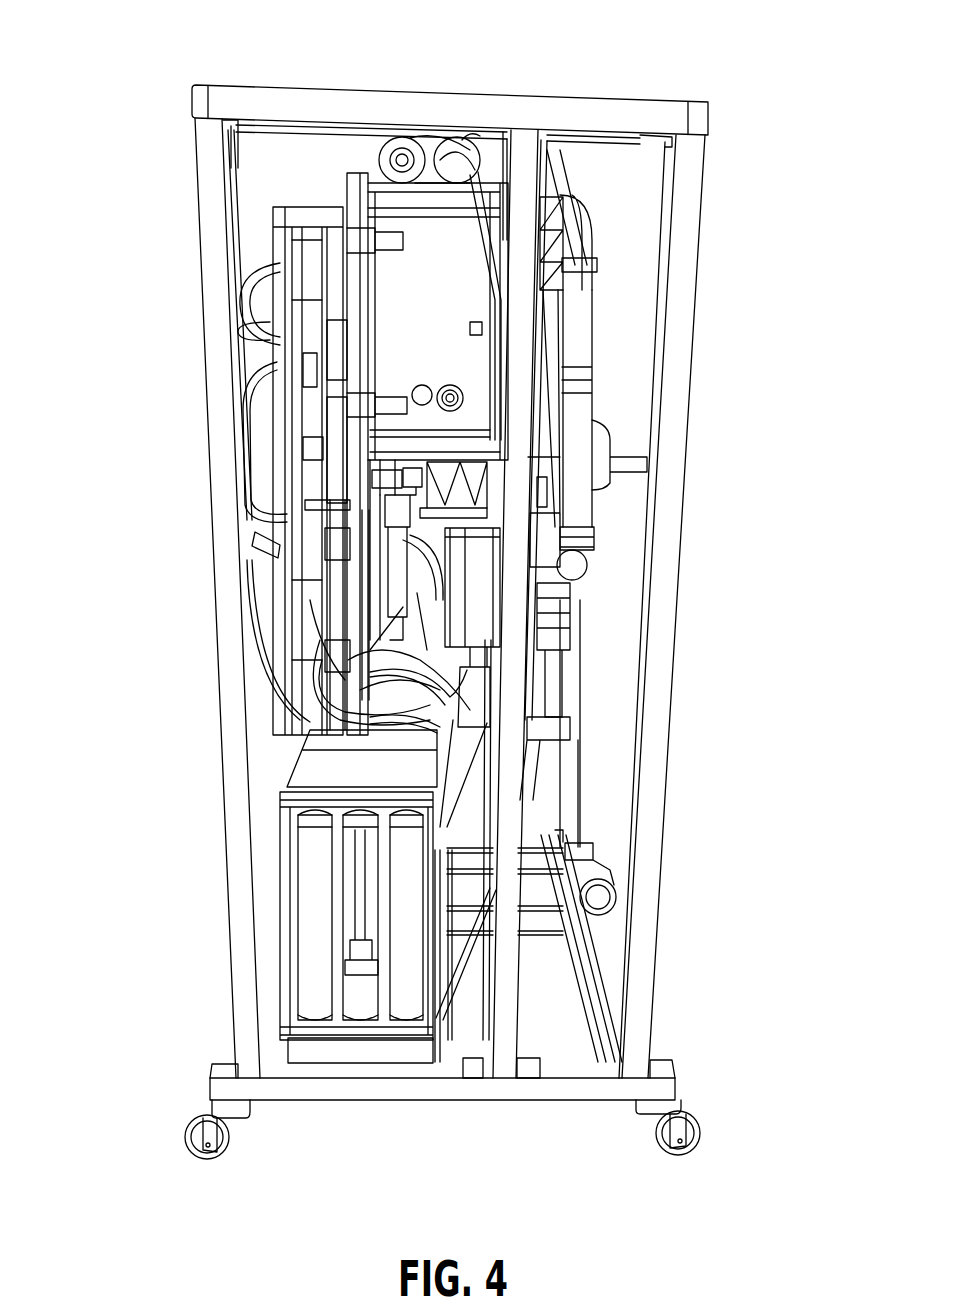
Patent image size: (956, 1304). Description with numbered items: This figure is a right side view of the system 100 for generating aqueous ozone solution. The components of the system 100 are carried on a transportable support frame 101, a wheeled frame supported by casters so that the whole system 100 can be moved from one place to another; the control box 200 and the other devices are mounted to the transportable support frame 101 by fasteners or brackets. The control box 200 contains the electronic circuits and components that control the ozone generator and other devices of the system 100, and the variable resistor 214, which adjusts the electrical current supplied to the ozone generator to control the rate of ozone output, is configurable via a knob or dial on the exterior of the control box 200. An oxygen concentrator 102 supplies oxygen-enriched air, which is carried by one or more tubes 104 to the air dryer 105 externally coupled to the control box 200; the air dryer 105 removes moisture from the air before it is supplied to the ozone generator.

The system 100 is at (185, 47).
The transportable support frame 101 is at (665, 629).
The oxygen concentrator 102 is at (292, 897).
The tubes 104 is at (404, 154).
The air dryer 105 is at (402, 154).
The control box 200 is at (334, 180).
The variable resistor 214 is at (460, 391).